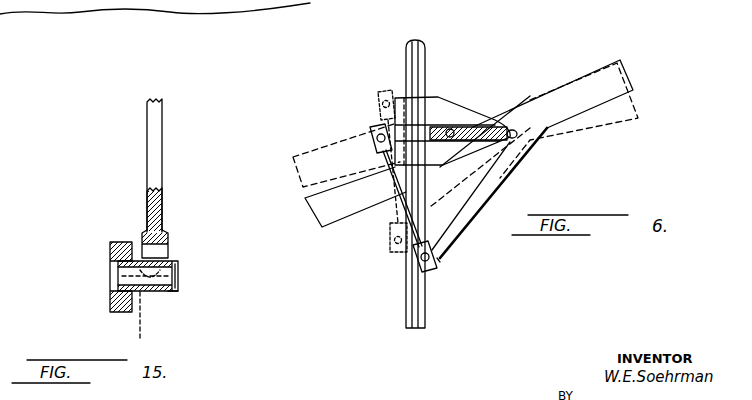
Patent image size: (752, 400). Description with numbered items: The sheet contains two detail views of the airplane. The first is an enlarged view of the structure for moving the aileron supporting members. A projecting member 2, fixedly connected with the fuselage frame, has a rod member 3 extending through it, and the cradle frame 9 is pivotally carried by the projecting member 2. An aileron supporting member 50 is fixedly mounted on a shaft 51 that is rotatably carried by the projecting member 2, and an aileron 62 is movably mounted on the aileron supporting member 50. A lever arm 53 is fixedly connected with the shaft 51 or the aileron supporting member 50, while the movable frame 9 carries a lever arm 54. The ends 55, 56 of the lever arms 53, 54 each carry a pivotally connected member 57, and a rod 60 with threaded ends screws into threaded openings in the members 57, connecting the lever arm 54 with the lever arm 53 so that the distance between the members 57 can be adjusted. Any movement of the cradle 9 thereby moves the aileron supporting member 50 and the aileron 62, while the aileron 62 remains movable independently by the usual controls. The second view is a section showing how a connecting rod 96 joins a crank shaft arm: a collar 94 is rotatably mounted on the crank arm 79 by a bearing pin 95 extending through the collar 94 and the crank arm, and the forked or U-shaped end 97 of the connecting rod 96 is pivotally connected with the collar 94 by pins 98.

In FIG. 6, the projecting member 2 is at (463, 105).
In FIG. 6, the rod member 3 is at (407, 52).
In FIG. 6, the cradle frame 9 is at (572, 82).
In FIG. 6, the aileron supporting member 50 is at (433, 127).
In FIG. 6, the shaft 51 is at (478, 214).
In FIG. 6, the lever arm 53 is at (422, 127).
In FIG. 6, the lever arm 54 is at (498, 192).
In FIG. 6, the end of lever arm 55 is at (378, 104).
In FIG. 6, the end of lever arm 56 is at (438, 264).
In FIG. 6, the member 57 is at (370, 135).
In FIG. 6, the rod 60 is at (399, 200).
In FIG. 6, the aileron 62 is at (512, 140).
In FIG. 15, the crank arm 79 is at (132, 256).
In FIG. 15, the collar 94 is at (176, 294).
In FIG. 15, the bearing pin 95 is at (178, 272).
In FIG. 15, the connecting rod 96 is at (160, 146).
In FIG. 15, the forked end 97 is at (170, 236).
In FIG. 15, the pin 98 is at (141, 341).